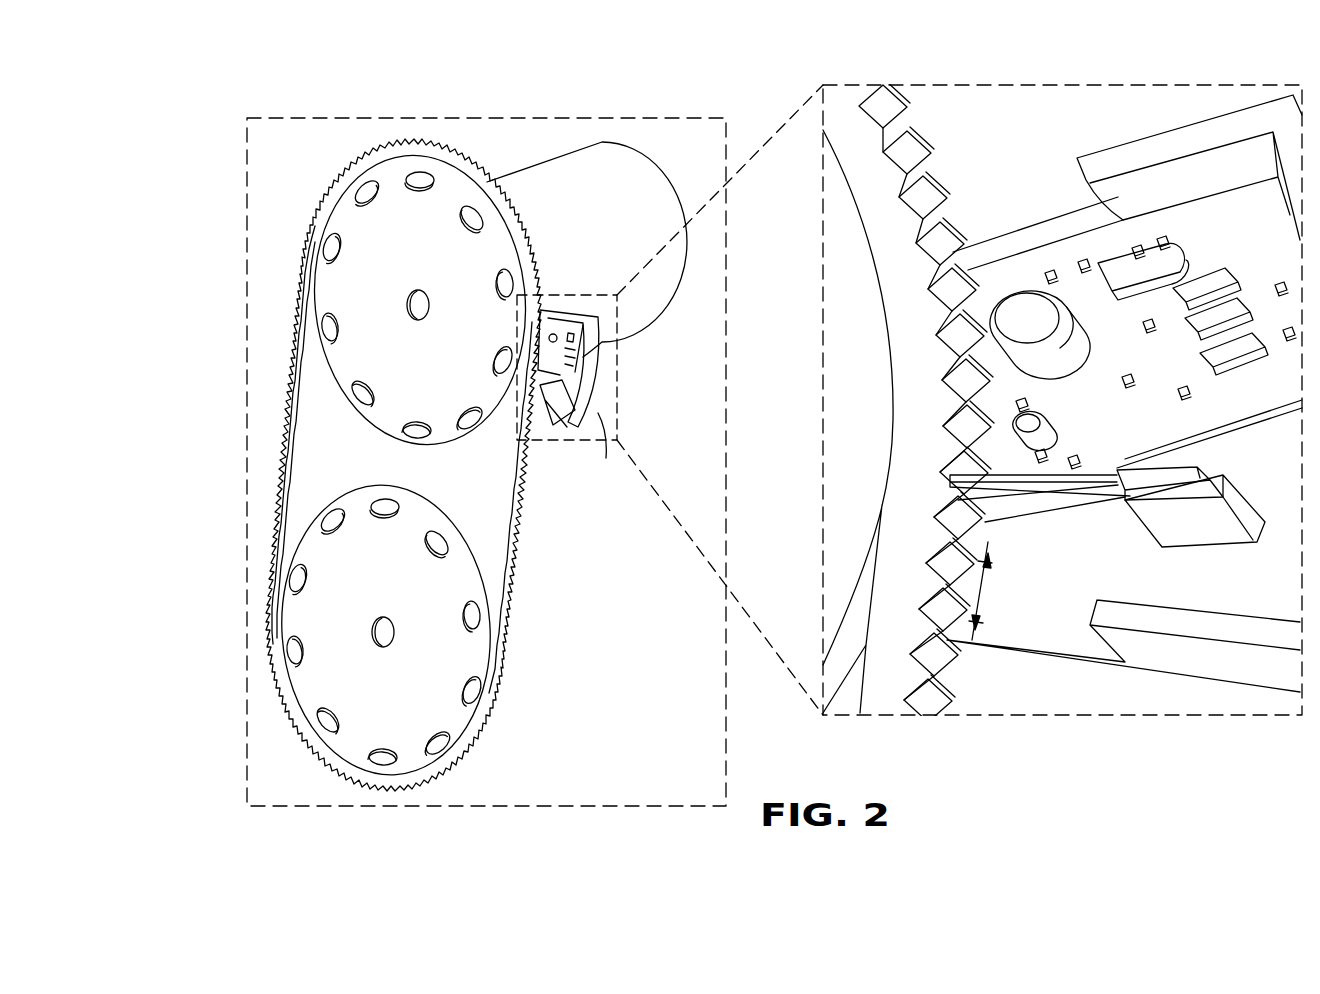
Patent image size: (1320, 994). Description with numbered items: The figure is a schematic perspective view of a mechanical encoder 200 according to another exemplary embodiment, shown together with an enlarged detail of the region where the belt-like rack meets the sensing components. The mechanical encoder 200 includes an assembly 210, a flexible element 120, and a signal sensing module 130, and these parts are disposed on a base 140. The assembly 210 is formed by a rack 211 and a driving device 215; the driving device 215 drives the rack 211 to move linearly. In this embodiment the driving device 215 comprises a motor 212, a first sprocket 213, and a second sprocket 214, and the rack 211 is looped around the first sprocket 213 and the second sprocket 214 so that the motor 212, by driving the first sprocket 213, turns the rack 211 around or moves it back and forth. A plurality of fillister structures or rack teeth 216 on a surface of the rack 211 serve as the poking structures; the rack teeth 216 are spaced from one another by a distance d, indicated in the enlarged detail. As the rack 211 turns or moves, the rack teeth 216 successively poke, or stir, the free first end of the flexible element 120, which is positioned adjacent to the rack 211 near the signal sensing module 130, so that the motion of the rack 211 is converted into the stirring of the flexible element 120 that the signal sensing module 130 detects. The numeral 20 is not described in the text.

The sensing module 20 is at (540, 441).
The flexible element 120 is at (1055, 490).
The signal sensing module 130 is at (585, 372).
The base 140 is at (600, 418).
The mechanical encoder 200 is at (661, 118).
The assembly 210 is at (186, 198).
The rack 211 is at (295, 335).
The motor 212 is at (560, 188).
The first sprocket 213 is at (332, 275).
The second sprocket 214 is at (320, 550).
The driving device 215 is at (443, 114).
The fillister structures/rack teeth 216 is at (495, 723).